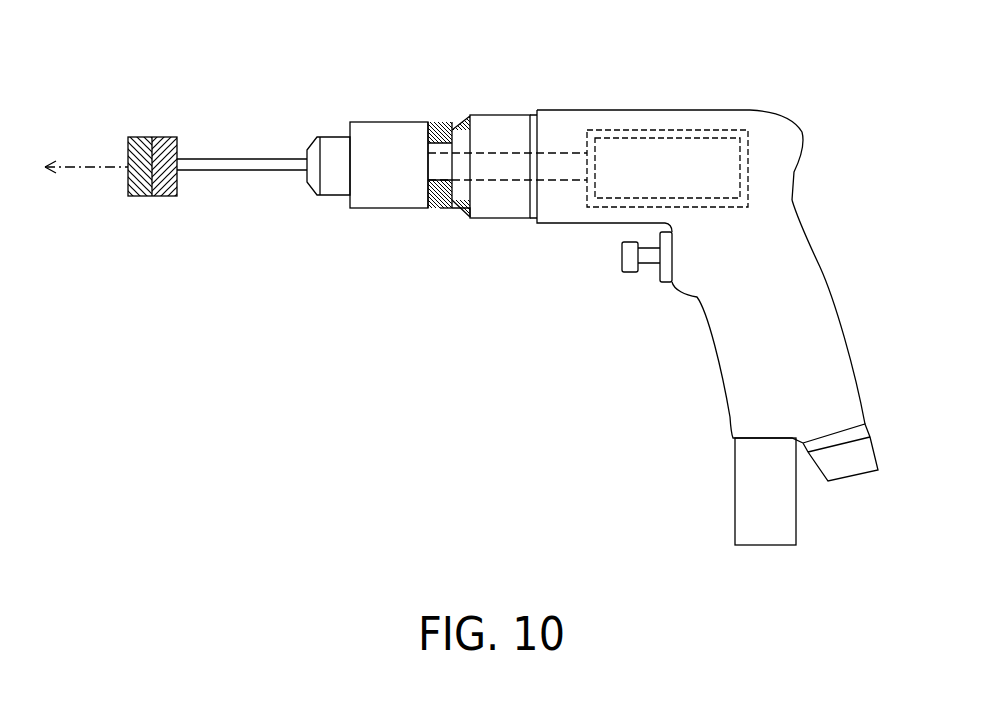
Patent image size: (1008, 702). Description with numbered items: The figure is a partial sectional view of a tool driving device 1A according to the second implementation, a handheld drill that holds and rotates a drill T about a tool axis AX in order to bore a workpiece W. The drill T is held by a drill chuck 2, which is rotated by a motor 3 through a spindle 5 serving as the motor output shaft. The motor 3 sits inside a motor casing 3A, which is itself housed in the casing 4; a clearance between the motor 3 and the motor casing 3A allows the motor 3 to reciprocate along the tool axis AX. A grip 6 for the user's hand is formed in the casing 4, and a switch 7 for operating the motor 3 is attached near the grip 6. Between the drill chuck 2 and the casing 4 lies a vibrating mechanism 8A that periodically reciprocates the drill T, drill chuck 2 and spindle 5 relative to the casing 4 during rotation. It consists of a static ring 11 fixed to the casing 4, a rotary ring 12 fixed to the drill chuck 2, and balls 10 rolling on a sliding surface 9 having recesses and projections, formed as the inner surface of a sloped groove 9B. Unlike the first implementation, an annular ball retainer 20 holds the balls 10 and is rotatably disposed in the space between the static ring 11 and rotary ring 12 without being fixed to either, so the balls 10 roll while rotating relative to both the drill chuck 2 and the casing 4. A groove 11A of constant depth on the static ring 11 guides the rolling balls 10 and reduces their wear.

The tool driving device 1A is at (329, 80).
The tool axis AX is at (95, 167).
The workpiece W is at (133, 197).
The drill T is at (252, 168).
The drill chuck 2 is at (330, 197).
The ball retainer 20 is at (430, 196).
The vibrating mechanism 8A is at (465, 112).
The sliding surface 9 is at (438, 116).
The balls 10 is at (448, 118).
The rotary ring 12 is at (428, 214).
The sloped groove 9B is at (440, 212).
The static ring 11 is at (458, 216).
The groove 11A is at (443, 213).
The spindle 5 is at (495, 148).
The casing 4 is at (563, 223).
The motor casing 3A is at (630, 128).
The motor 3 is at (693, 150).
The switch 7 is at (627, 256).
The grip 6 is at (713, 355).